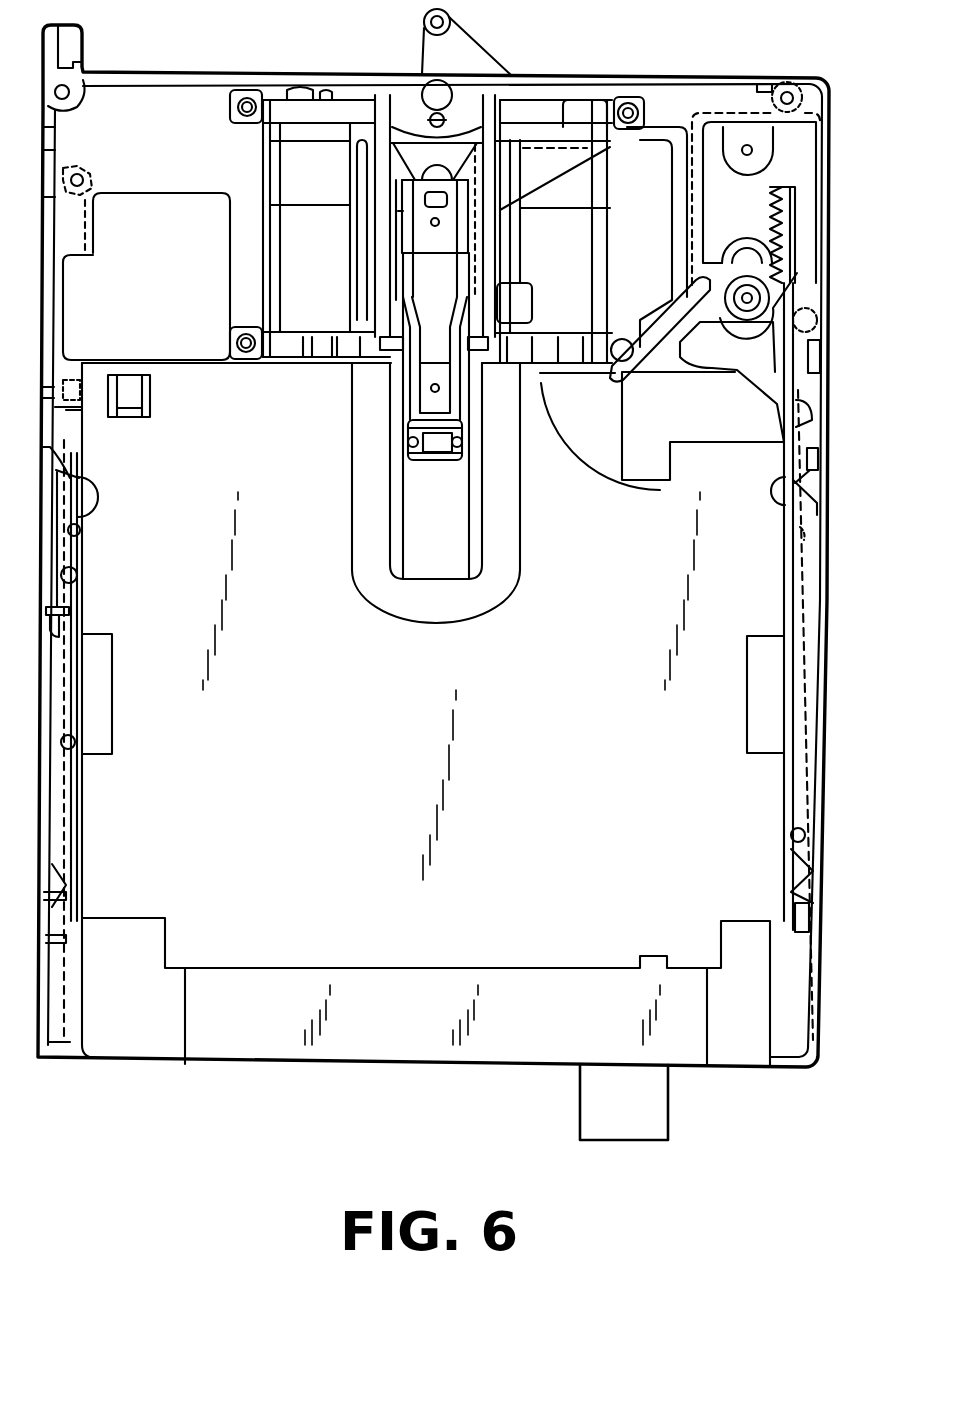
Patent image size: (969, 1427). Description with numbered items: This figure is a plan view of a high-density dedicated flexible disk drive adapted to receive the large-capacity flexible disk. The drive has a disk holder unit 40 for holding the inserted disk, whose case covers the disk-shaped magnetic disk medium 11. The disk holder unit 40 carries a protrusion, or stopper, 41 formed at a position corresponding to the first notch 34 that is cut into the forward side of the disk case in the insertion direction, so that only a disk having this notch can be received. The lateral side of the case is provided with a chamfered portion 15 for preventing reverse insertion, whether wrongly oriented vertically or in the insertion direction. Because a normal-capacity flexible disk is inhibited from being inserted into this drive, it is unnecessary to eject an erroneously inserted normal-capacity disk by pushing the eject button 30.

The magnetic disk medium 11 is at (452, 533).
The chamfered portion 15 is at (765, 385).
The eject button 30 is at (623, 1120).
The first notch 34 is at (128, 382).
The disk holder unit 40 is at (302, 946).
The protrusion (stopper) 41 is at (127, 420).